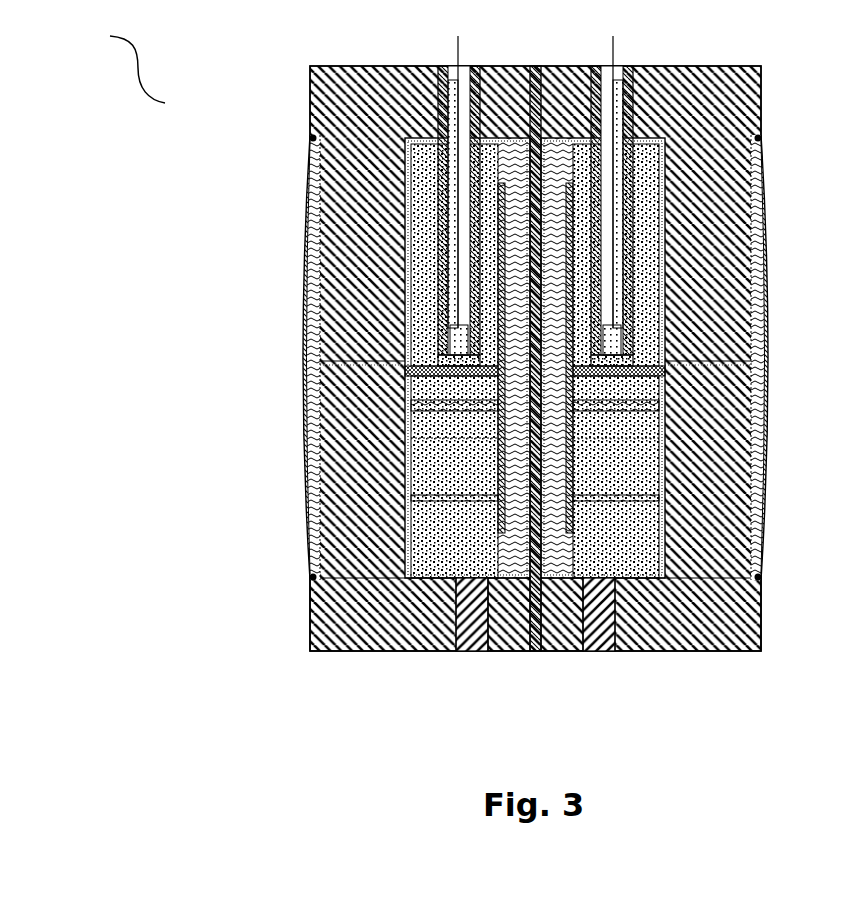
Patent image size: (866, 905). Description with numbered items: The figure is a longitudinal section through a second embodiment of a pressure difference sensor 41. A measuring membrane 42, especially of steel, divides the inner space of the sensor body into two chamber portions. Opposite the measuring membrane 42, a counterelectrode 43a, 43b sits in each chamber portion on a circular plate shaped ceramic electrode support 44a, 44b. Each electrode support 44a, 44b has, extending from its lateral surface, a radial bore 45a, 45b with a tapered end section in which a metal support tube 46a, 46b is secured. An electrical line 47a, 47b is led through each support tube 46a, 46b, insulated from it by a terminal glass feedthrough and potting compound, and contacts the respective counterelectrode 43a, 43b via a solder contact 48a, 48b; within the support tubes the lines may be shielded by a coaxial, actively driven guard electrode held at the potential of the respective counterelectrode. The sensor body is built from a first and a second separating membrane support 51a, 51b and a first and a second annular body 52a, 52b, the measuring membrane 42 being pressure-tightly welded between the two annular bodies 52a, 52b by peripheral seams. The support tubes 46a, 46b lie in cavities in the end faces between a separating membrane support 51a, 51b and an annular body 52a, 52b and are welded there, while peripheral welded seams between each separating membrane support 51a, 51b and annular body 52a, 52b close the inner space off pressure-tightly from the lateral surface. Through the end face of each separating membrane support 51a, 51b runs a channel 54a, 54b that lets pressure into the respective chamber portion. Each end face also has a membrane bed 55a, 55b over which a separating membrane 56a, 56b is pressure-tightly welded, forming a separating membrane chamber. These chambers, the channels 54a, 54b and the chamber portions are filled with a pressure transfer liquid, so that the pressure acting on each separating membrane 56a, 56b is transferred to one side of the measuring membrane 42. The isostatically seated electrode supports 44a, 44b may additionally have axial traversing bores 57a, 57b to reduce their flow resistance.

The pressure difference sensor 41 is at (90, 36).
The measuring membrane 42 is at (719, 593).
The counterelectrode 43a is at (395, 192).
The counterelectrode 43b is at (660, 192).
The electrode support 44a is at (477, 555).
The electrode support 44b is at (578, 555).
The radial bore 45a is at (420, 283).
The radial bore 45b is at (633, 283).
The support tube 46a is at (434, 83).
The support tube 46b is at (621, 84).
The electrical line 47a is at (436, 117).
The electrical line 47b is at (619, 117).
The solder contact 48a is at (408, 368).
The solder contact 48b is at (648, 368).
The separating membrane support 51a is at (402, 597).
The separating membrane support 51b is at (698, 633).
The annular body 52a is at (470, 633).
The annular body 52b is at (585, 633).
The channel 54a is at (335, 353).
The channel 54b is at (720, 353).
The membrane bed 55a is at (430, 402).
The membrane bed 55b is at (608, 402).
The separating membrane 56a is at (292, 262).
The separating membrane 56b is at (764, 263).
The traversing bore 57a is at (402, 428).
The traversing bore 57b is at (653, 428).